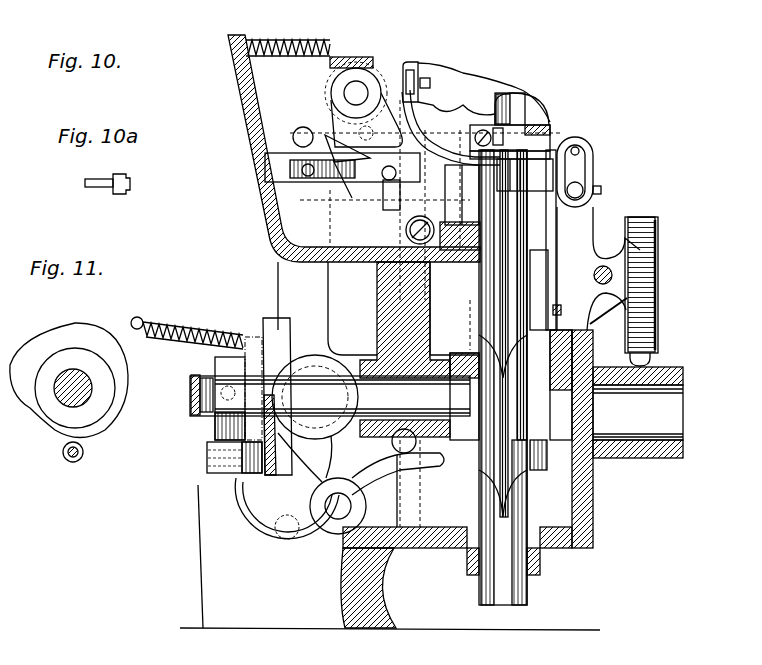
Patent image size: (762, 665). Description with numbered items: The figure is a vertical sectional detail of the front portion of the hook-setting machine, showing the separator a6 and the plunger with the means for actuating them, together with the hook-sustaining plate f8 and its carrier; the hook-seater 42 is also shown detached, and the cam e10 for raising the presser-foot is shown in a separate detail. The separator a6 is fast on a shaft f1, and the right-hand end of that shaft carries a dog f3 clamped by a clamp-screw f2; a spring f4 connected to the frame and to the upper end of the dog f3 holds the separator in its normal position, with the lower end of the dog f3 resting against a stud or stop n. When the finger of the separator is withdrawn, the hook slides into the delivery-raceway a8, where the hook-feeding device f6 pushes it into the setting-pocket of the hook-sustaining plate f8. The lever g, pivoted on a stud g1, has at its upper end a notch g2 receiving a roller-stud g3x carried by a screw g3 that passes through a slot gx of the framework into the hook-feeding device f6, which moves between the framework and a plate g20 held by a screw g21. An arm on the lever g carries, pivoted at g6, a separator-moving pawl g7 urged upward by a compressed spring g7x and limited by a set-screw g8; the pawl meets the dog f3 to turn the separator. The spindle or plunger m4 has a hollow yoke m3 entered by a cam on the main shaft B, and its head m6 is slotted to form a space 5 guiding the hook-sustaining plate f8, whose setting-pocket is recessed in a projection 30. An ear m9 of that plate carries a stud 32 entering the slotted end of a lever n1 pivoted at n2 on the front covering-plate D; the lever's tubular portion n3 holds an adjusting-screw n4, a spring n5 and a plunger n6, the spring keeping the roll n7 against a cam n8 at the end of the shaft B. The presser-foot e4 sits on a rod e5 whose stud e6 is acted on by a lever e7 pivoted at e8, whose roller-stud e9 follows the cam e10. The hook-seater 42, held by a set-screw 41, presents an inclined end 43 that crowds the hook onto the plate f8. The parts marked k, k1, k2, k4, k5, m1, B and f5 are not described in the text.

In FIG. 10, the spring f4 is at (280, 42).
In FIG. 10, the clamp-screw f2 is at (340, 66).
In FIG. 10, the shaft f1 is at (345, 93).
In FIG. 10, the stud or stop n is at (411, 62).
In FIG. 10, the separator a6 is at (377, 112).
In FIG. 10, the delivery-raceway a8 is at (448, 152).
In FIG. 10, the set-screw 41 is at (506, 126).
In FIG. 10, the presser-foot e4 is at (541, 108).
In FIG. 10, the inclined end 43 is at (493, 140).
In FIG. 10A, the inclined end 43 is at (128, 186).
In FIG. 10, the hook-sustaining plate f8 is at (535, 175).
In FIG. 10, the projection 30 is at (523, 152).
In FIG. 10, the hollow yoke m3 is at (528, 495).
In FIG. 10, the head of the spindle m6 is at (474, 195).
In FIG. 10, the spindle or plunger m4 is at (481, 312).
In FIG. 10, the screw g21 is at (454, 276).
In FIG. 10, the plate g20 is at (349, 276).
In FIG. 10, the bracket m1 is at (560, 178).
In FIG. 10, the lever n1 is at (592, 226).
In FIG. 10, the ear m9 is at (580, 168).
In FIG. 10, the stud 32 is at (582, 188).
In FIG. 10, the roll n7 is at (548, 296).
In FIG. 10, the pivot stud n2 is at (658, 262).
In FIG. 10, the spring n5 is at (650, 302).
In FIG. 10, the tubular portion n3 is at (657, 224).
In FIG. 10, the adjusting-screw n4 is at (660, 250).
In FIG. 10, the plunger n6 is at (652, 366).
In FIG. 10, the front covering-plate D is at (596, 498).
In FIG. 10, the cam n8 is at (596, 467).
In FIG. 10, the shaft B is at (685, 400).
In FIG. 10, the space 5 is at (717, 377).
In FIG. 10, the shaft k is at (325, 388).
In FIG. 10, the shaft end k4 is at (172, 350).
In FIG. 10, the spring k5 is at (180, 322).
In FIG. 10, the hub k2 is at (300, 330).
In FIG. 10, the lever k1 is at (309, 384).
In FIG. 10, the cam e10 is at (210, 434).
In FIG. 11, the cam e10 is at (50, 332).
In FIG. 10, the roller-stud e9 is at (245, 478).
In FIG. 11, the roller-stud e9 is at (63, 454).
In FIG. 10, the pivot e8 is at (334, 518).
In FIG. 10, the stud g1 is at (278, 535).
In FIG. 10, the lever e7 is at (398, 479).
In FIG. 10, the stud e6 is at (424, 455).
In FIG. 10, the rod e5 is at (418, 514).
In FIG. 10, the notch g2 is at (268, 170).
In FIG. 10, the slot gx is at (262, 160).
In FIG. 10, the screw g3 is at (285, 165).
In FIG. 10, the dog f3 is at (258, 128).
In FIG. 10, the lever f5 is at (285, 212).
In FIG. 10, the roller-stud g3x is at (211, 264).
In FIG. 10, the lever g is at (275, 255).
In FIG. 10, the spring g7x is at (324, 189).
In FIG. 10, the pivot g6 is at (371, 200).
In FIG. 10, the separator-moving pawl g7 is at (394, 143).
In FIG. 10, the set-screw g8 is at (406, 232).
In FIG. 10, the hook-feeding device f6 is at (458, 202).
In FIG. 10A, the hook-seater 42 is at (98, 193).